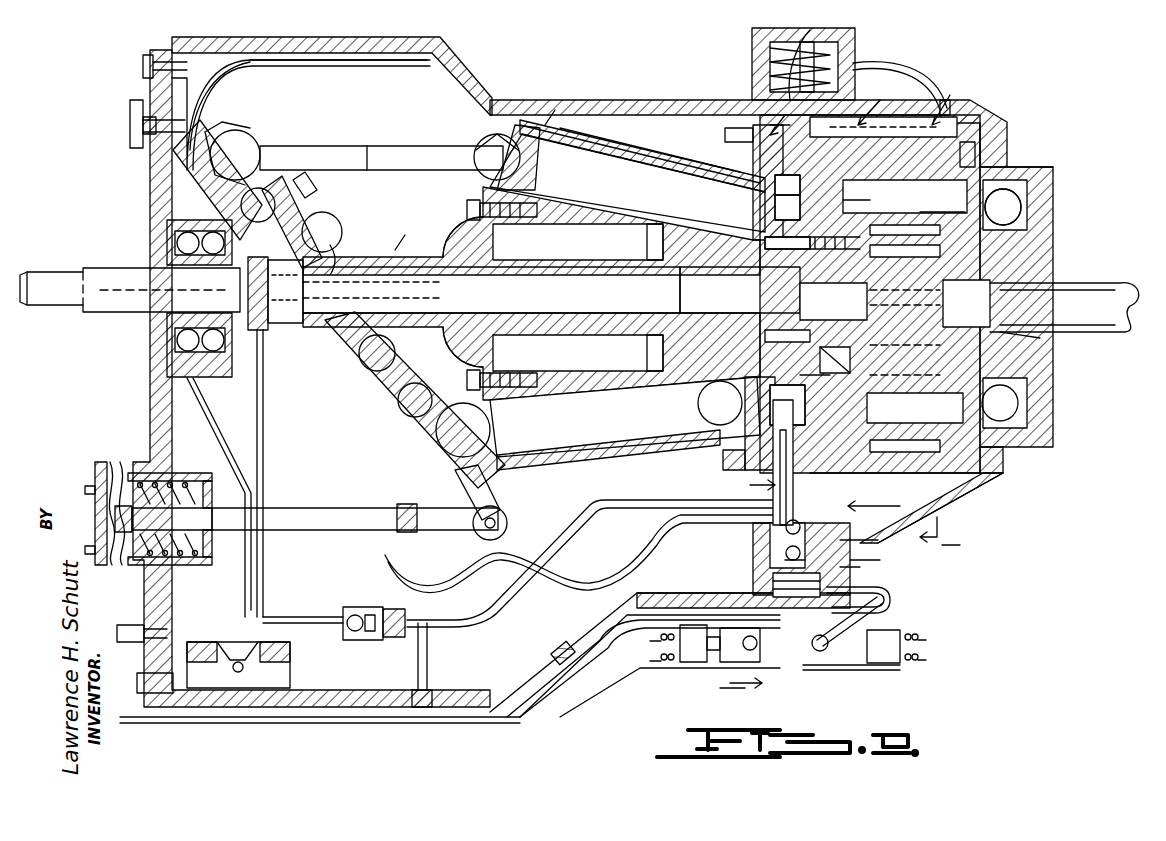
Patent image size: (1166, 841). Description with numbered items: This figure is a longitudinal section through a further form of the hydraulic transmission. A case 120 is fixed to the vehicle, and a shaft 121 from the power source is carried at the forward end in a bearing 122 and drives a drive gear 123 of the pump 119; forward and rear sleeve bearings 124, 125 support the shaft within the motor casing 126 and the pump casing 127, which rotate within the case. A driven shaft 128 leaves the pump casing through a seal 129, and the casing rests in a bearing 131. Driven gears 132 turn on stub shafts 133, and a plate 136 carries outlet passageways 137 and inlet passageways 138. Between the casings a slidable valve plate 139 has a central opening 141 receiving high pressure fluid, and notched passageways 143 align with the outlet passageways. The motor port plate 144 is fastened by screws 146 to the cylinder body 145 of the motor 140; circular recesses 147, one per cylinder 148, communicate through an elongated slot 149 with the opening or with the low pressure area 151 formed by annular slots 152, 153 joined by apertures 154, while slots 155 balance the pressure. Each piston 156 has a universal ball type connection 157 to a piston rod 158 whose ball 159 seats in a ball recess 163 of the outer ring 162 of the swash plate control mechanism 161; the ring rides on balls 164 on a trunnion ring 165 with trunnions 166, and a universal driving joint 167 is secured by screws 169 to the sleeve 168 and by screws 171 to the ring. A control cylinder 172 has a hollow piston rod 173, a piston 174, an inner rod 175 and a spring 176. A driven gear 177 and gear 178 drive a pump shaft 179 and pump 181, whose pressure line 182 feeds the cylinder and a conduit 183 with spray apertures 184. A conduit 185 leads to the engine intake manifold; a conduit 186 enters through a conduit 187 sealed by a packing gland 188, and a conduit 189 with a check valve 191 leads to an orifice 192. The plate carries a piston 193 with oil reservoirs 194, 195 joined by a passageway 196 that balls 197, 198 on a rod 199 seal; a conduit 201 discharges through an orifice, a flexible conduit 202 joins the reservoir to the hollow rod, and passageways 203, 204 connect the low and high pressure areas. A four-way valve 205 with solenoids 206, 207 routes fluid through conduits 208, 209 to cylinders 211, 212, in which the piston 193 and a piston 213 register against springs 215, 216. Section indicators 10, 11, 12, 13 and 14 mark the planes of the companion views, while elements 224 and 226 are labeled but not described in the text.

The section line 10 is at (767, 296).
The section line 11 is at (880, 295).
The section line 12 is at (879, 299).
The section line 13 is at (949, 320).
The section line 14 is at (780, 359).
The pump 119 is at (992, 120).
The case 120 is at (660, 100).
The shaft 121 is at (105, 298).
The bearing 122 is at (175, 242).
The drive gear 123 is at (860, 325).
The sleeve bearing 124 is at (690, 282).
The sleeve bearing 125 is at (966, 303).
The motor casing 126 is at (660, 205).
The pump casing 127 is at (1025, 170).
The driven shaft 128 is at (1085, 332).
The seal 129 is at (1050, 280).
The bearing 131 is at (1050, 195).
The driven gears 132 is at (905, 473).
The stub shafts 133 is at (985, 168).
The plate 136 is at (878, 473).
The passageways 137 is at (895, 404).
The passageways 138 is at (870, 126).
The slidable valve plate 139 is at (905, 194).
The motor 140 is at (565, 120).
The central opening 141 is at (625, 417).
The notched passageways 143 is at (730, 305).
The motor port plate 144 is at (772, 125).
The cylinder body 145 is at (645, 150).
The screws 146 is at (725, 136).
The circular recesses 147 is at (750, 180).
The cylinders 148 is at (580, 150).
The elongated slot 149 is at (765, 244).
The low pressure area 151 is at (775, 210).
The annular slot 152 is at (775, 192).
The annular slot 153 is at (863, 200).
The apertures 154 is at (720, 463).
The slots 155 is at (805, 398).
The piston 156 is at (522, 130).
The universal ball type connection 157 is at (478, 140).
The piston rod 158 is at (470, 147).
The ball 159 is at (265, 150).
The swash plate control mechanism 161 is at (398, 245).
The outer ring 162 is at (305, 198).
The ball recesses 163 is at (258, 128).
The balls 164 is at (381, 158).
The trunnion ring 165 is at (165, 192).
The trunnions 166 is at (412, 256).
The universal driving joint 167 is at (365, 252).
The sleeve 168 is at (445, 257).
The screws 169 is at (468, 205).
The screws 171 is at (330, 215).
The control cylinder 172 is at (175, 570).
The hollow piston rod 173 is at (305, 508).
The piston 174 is at (205, 470).
The rod 175 is at (163, 519).
The spring 176 is at (118, 460).
The driven gear 177 is at (371, 287).
The gear 178 is at (130, 290).
The pump shaft 179 is at (265, 386).
The pump 181 is at (285, 646).
The pressure line 182 is at (225, 585).
The conduit 183 is at (205, 86).
The spray apertures 184 is at (316, 62).
The conduit 185 is at (85, 488).
The conduit 186 is at (300, 730).
The conduit 187 is at (428, 658).
The packing gland 188 is at (440, 680).
The conduit 189 is at (288, 615).
The check valve 191 is at (375, 607).
The orifice 192 is at (397, 609).
The piston 193 is at (862, 578).
The oil reservoir 194 is at (785, 531).
The oil reservoir 195 is at (870, 552).
The passageway 196 is at (880, 542).
The ball 197 is at (785, 550).
The ball 198 is at (864, 570).
The rod 199 is at (785, 558).
The conduit 201 is at (940, 525).
The flexible conduit 202 is at (605, 575).
The passageway 203 is at (740, 505).
The passageway 204 is at (805, 473).
The four-way valve 205 is at (818, 668).
The solenoid 206 is at (690, 665).
The solenoid 207 is at (885, 668).
The conduit 208 is at (925, 72).
The conduit 209 is at (892, 596).
The cylinder 211 is at (775, 75).
The cylinder 212 is at (890, 612).
The piston 213 is at (850, 100).
The spring 215 is at (765, 60).
The spring 216 is at (773, 582).
The threaded plug 224 is at (816, 242).
The adjusting screw 226 is at (130, 124).